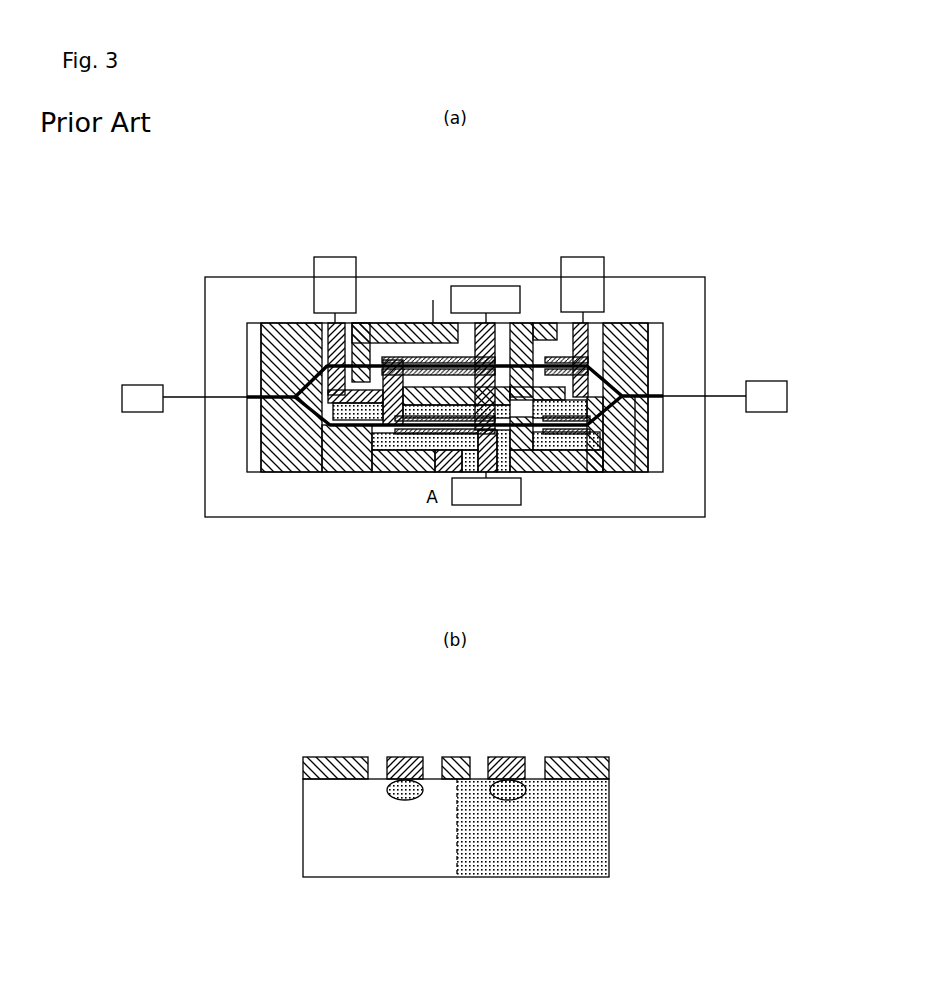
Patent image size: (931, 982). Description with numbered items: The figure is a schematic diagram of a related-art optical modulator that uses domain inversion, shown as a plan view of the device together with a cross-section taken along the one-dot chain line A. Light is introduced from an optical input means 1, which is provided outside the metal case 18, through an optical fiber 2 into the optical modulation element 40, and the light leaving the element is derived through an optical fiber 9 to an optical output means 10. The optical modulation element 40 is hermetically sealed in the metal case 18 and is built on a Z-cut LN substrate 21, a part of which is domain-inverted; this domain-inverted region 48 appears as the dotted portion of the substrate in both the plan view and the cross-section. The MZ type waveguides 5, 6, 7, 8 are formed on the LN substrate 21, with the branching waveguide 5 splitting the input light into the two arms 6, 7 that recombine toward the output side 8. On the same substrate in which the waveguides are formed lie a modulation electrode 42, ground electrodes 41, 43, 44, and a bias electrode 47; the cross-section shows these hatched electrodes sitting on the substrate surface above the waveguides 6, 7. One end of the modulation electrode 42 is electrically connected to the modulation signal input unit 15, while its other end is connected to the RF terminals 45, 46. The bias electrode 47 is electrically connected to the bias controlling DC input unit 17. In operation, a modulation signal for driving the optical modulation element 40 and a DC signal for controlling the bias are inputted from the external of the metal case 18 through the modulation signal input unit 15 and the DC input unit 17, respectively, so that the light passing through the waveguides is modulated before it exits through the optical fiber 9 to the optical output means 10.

The optical input means 1 is at (143, 413).
The optical fiber 2 is at (185, 395).
The MZ type waveguide 5 is at (282, 402).
The MZ type waveguide 6 is at (353, 445).
The MZ type waveguide 7 is at (378, 365).
The MZ type waveguide 8 is at (634, 472).
The optical fiber 9 is at (686, 400).
The optical output means 10 is at (767, 381).
The modulation signal input unit 15 is at (335, 257).
The DC input unit 17 is at (583, 257).
The metal case 18 is at (706, 326).
The Z-cut LN substrate 21 is at (247, 453).
The optical modulation element 40 is at (262, 323).
The ground electrode 41 is at (373, 458).
The modulation electrode 42 is at (406, 345).
The ground electrode 43 is at (548, 462).
The ground electrode 44 is at (421, 325).
The RF terminal 45 is at (487, 505).
The RF terminal 46 is at (487, 286).
The bias electrode 47 is at (585, 336).
The domain-inverted region 48 is at (338, 412).